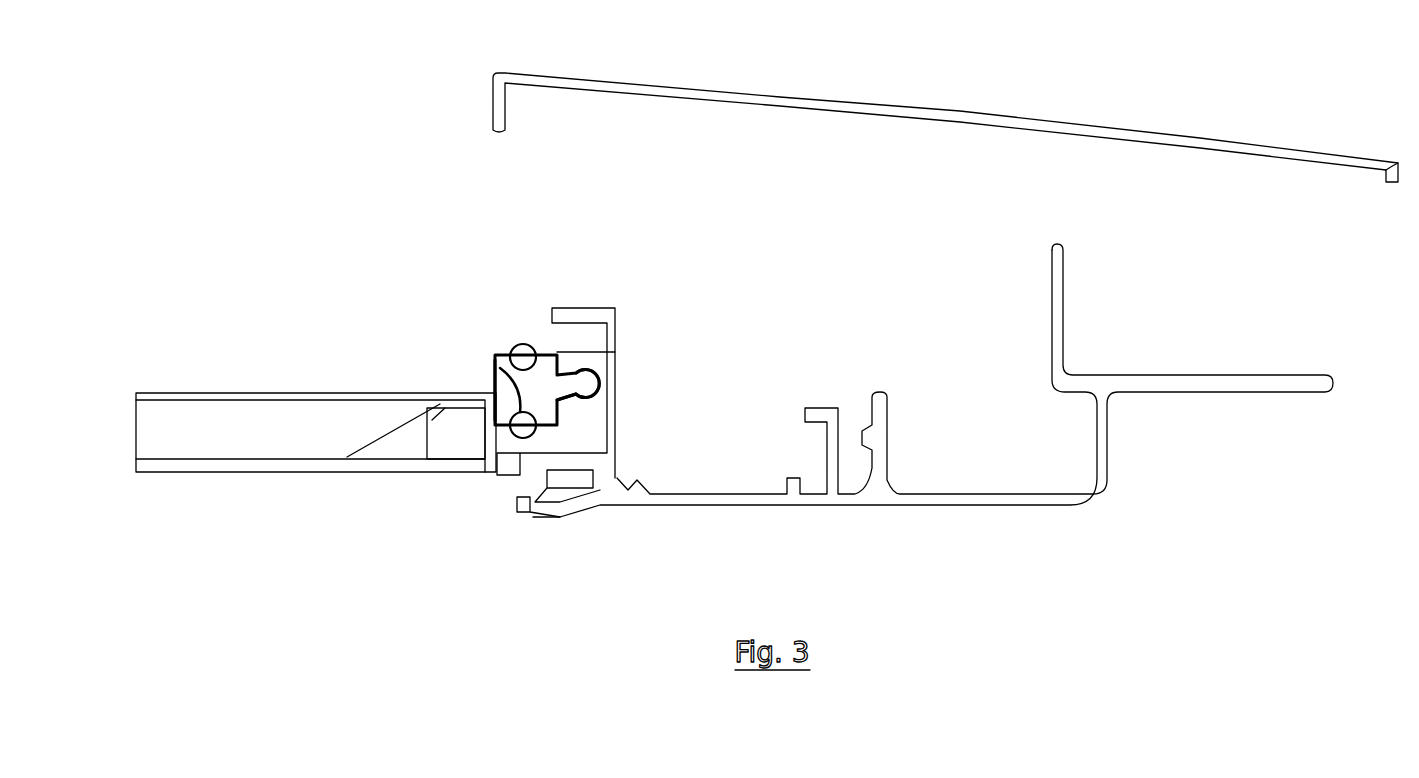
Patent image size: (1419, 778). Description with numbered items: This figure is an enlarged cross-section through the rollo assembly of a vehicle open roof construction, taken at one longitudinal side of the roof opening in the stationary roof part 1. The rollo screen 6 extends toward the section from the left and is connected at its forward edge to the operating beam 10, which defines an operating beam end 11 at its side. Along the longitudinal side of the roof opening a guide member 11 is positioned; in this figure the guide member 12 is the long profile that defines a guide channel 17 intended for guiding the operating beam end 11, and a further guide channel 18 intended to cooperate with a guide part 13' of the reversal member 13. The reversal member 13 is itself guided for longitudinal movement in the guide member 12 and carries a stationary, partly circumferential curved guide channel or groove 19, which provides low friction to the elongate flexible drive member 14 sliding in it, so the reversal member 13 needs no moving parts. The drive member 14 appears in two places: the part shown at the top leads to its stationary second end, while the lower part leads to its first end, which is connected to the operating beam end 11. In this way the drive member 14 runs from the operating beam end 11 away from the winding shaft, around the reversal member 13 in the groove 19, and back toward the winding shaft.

The stationary roof part 1 is at (780, 102).
The rollo screen 6 is at (198, 473).
The operating beam 10 is at (335, 445).
The operating beam end 11 is at (590, 444).
The guide member 12 is at (612, 372).
The reversal member 13 is at (451, 388).
The guide part 13' is at (639, 385).
The elongate flexible drive member 14 is at (521, 345).
The guide channel 17 is at (543, 457).
The guide channel 18 is at (592, 396).
The curved guide channel or groove 19 is at (495, 365).